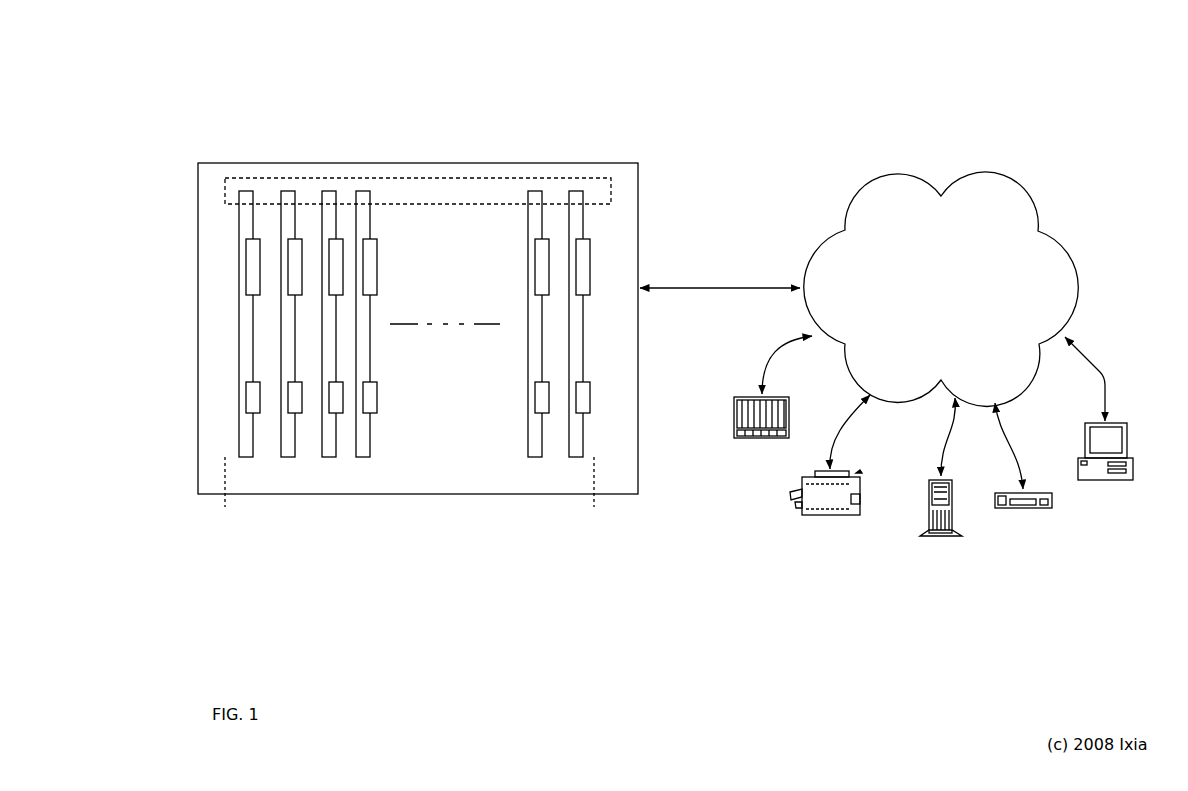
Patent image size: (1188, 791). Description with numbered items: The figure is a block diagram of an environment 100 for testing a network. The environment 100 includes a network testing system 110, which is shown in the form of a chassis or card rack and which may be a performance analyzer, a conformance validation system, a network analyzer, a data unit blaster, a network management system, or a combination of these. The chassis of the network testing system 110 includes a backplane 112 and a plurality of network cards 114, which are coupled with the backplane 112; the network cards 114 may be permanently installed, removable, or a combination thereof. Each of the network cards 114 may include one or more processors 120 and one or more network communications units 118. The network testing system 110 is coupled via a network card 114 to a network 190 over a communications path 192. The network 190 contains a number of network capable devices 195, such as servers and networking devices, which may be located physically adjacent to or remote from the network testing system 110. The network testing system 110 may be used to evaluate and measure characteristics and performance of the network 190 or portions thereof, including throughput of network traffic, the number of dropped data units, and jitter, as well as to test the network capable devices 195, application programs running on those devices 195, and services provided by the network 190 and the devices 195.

The environment 100 is at (1023, 74).
The network testing system 110 is at (417, 163).
The backplane 112 is at (613, 190).
The network cards 114 is at (597, 507).
The network communications unit 118 is at (590, 395).
The processor 120 is at (590, 267).
The network 190 is at (941, 289).
The communications path 192 is at (694, 286).
The network capable devices 195 is at (933, 457).